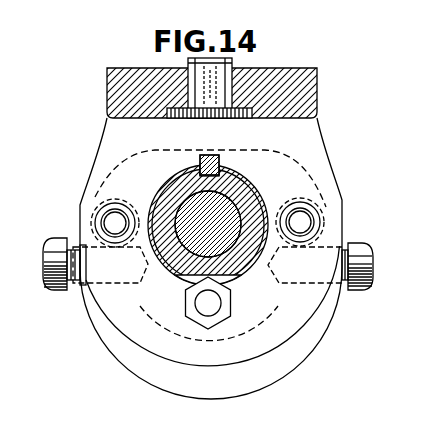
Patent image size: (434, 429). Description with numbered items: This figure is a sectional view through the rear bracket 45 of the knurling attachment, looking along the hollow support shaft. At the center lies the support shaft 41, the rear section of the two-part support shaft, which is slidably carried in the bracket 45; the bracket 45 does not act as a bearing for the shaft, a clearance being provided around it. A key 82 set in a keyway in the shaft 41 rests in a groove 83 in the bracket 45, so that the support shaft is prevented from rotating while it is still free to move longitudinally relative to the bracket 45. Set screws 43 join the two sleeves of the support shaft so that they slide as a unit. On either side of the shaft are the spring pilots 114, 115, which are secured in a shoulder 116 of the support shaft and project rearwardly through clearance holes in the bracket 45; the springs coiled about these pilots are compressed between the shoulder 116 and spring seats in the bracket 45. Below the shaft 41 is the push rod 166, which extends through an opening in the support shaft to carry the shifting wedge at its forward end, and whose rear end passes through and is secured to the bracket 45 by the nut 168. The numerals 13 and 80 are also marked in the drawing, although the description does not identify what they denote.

The clamping screw 13 is at (55, 247).
The support shaft 41 is at (247, 195).
The set screws 43 is at (373, 232).
The bracket 45 is at (325, 178).
The spindle bore 80 is at (221, 208).
The key 82 is at (220, 160).
The groove 83 is at (208, 154).
The spring pilot 114 is at (113, 222).
The spring pilot 115 is at (306, 221).
The shoulder 116 is at (282, 355).
The push rod 166 is at (212, 300).
The nut 168 is at (190, 297).